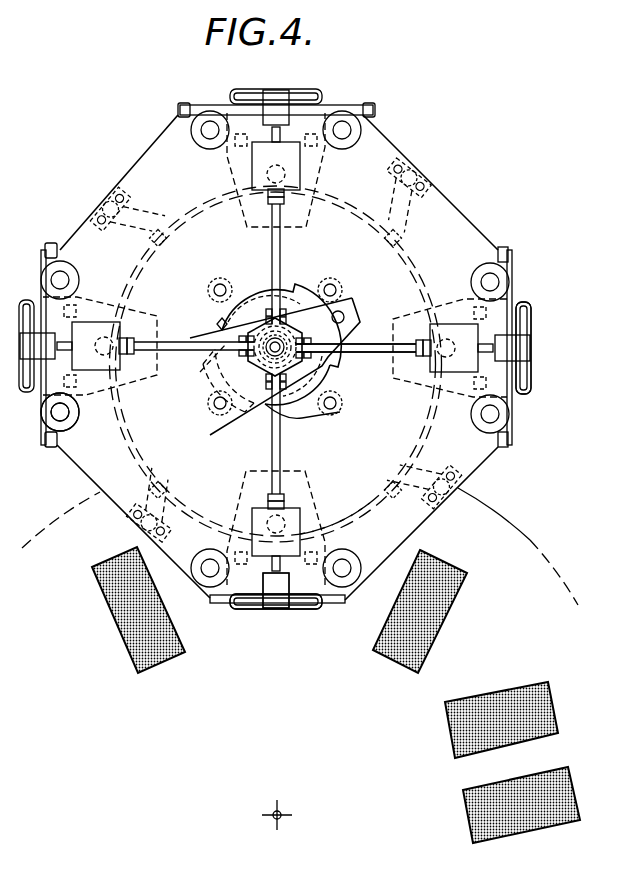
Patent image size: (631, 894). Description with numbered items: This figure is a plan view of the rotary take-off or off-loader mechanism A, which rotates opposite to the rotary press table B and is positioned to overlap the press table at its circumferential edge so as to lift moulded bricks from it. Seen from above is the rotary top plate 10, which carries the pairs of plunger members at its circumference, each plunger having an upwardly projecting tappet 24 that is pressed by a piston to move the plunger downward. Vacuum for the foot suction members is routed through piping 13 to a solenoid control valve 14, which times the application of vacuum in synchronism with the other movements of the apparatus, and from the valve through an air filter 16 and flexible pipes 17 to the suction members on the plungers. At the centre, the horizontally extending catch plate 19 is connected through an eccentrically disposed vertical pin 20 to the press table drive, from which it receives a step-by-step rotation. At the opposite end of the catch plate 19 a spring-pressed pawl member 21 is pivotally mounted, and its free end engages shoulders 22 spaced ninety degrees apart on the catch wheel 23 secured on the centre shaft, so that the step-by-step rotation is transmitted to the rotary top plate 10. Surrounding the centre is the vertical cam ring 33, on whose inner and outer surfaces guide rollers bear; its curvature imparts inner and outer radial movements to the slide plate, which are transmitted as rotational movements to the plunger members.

The rotary top plate 10 is at (84, 472).
The piping 13 is at (356, 356).
The solenoid control valve 14 is at (334, 373).
The air filter 16 is at (281, 604).
The flexible pipes 17 is at (307, 608).
The catch plate 19 is at (340, 302).
The eccentrically disposed vertical pin 20 is at (345, 306).
The spring-pressed pawl member 21 is at (192, 393).
The shoulders 22 is at (220, 322).
The catch wheel 23 is at (340, 412).
The tappets 24 is at (72, 420).
The vertical cam ring 33 is at (372, 500).
The rotary take-off or off-loader mechanism A is at (473, 464).
The rotary press table B is at (537, 542).